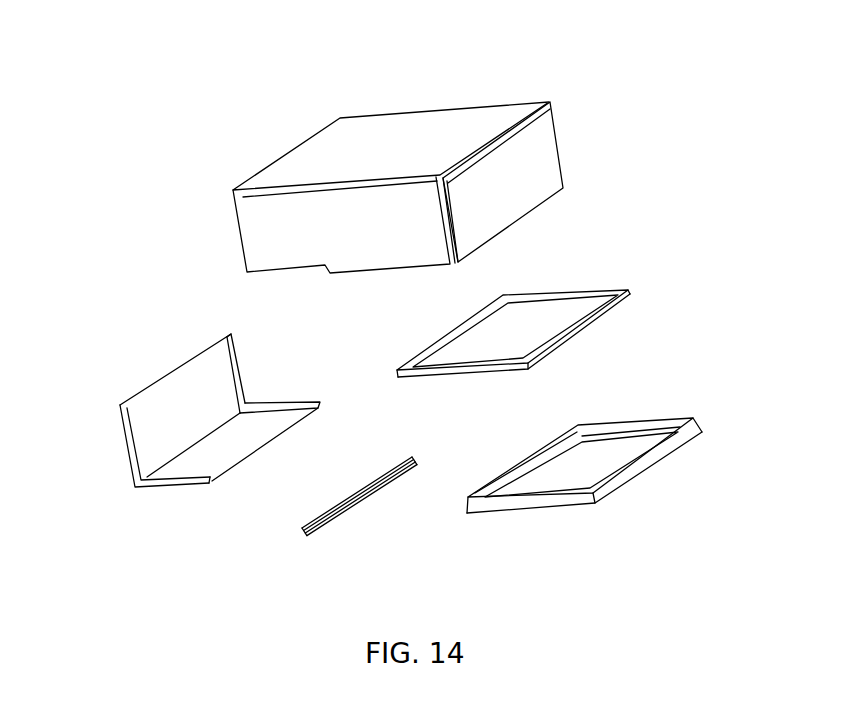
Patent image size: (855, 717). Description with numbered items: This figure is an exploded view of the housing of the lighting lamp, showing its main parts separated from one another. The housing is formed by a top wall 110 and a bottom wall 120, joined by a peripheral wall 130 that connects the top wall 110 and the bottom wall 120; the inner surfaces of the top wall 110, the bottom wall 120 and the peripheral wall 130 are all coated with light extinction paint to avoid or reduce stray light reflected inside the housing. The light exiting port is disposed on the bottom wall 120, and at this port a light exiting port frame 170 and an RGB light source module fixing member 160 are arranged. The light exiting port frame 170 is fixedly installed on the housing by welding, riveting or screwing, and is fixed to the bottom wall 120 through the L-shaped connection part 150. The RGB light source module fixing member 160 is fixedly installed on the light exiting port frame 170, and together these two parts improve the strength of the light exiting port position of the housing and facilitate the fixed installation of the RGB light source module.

The top wall 110 is at (403, 140).
The bottom wall 120 is at (232, 447).
The peripheral wall 130 is at (270, 232).
The L-shaped connection part 150 is at (343, 512).
The RGB light source module fixing member 160 is at (587, 293).
The light exiting port frame 170 is at (617, 430).